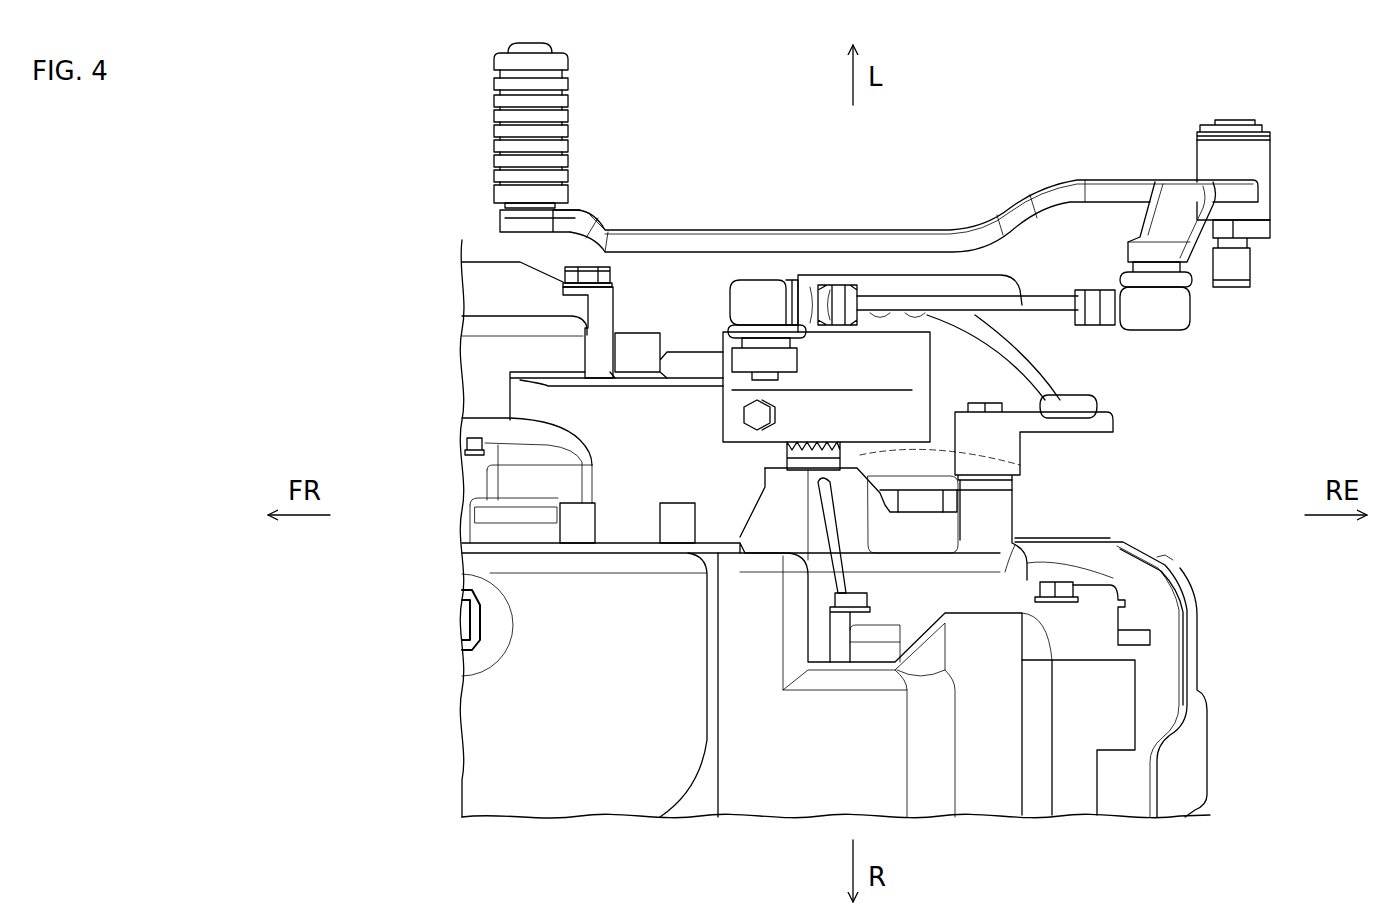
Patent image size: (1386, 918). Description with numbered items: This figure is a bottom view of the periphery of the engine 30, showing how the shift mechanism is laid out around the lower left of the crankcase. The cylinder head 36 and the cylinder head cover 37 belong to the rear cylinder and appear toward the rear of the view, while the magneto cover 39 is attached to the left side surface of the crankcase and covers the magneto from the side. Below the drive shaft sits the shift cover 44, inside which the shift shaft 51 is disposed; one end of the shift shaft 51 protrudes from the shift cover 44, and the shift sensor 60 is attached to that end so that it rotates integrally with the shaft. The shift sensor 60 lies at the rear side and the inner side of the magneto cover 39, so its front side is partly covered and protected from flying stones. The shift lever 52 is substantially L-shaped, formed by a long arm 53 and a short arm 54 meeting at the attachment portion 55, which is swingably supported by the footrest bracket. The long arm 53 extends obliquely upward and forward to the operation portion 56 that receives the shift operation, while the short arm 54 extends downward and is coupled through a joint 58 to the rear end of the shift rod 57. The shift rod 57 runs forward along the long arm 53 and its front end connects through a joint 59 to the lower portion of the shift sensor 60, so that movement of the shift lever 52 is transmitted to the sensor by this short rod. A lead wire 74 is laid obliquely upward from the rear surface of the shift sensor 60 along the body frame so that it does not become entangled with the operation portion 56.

The engine 30 is at (410, 213).
The cylinder head 36 is at (1160, 618).
The cylinder head cover 37 is at (1212, 728).
The magneto cover 39 is at (487, 270).
The shift cover 44 is at (1005, 570).
The shift shaft 51 is at (1020, 463).
The shift lever 52 is at (1103, 158).
The long arm 53 is at (782, 228).
The short arm 54 is at (1167, 215).
The attachment portion 55 is at (1262, 162).
The operation portion 56 is at (566, 101).
The shift rod 57 is at (1035, 300).
The joint 58 is at (1183, 318).
The joint 59 is at (748, 288).
The shift sensor 60 is at (893, 345).
The lead wire 74 is at (1012, 352).